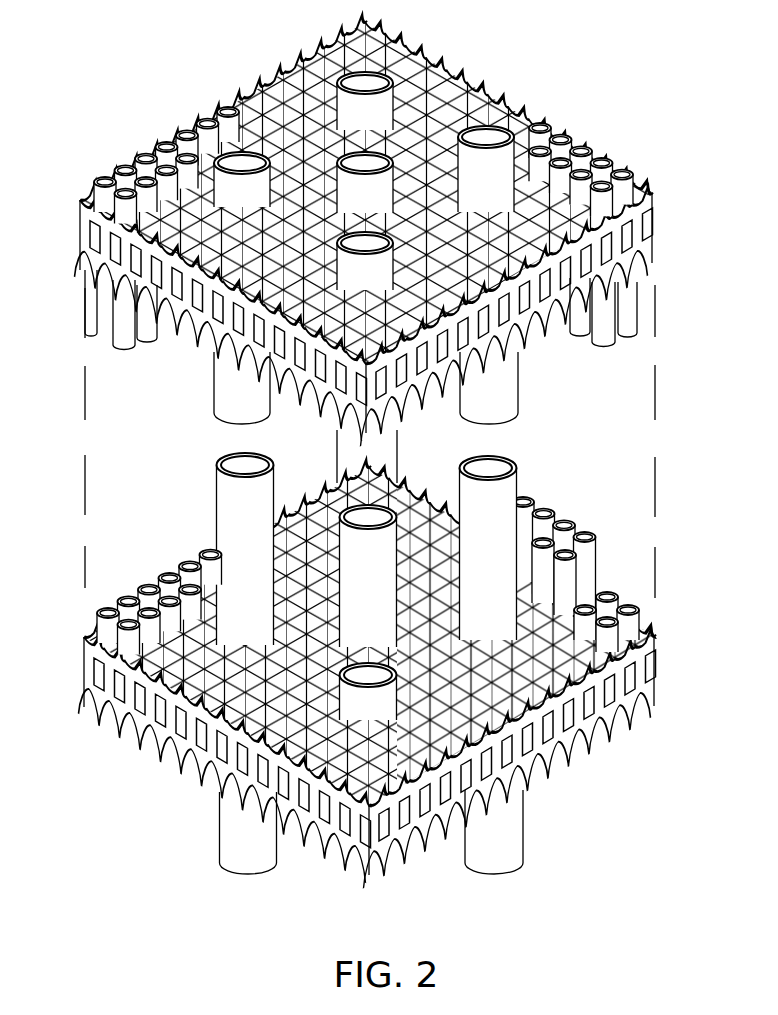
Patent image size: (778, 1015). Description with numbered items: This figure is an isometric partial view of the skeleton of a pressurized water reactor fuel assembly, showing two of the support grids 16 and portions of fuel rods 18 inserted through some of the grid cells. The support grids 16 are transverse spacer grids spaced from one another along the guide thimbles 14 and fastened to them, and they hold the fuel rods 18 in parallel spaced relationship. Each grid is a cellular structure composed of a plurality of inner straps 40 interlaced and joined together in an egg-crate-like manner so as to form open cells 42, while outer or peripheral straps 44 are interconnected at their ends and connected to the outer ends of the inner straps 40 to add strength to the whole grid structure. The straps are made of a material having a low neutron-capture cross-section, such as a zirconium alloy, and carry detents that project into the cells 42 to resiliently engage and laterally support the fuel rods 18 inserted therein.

The guide thimbles 14 is at (510, 123).
The support grids 16 is at (652, 222).
The fuel rods 18 is at (157, 147).
The inner straps 40 is at (447, 83).
The open cells 42 is at (294, 82).
The outer straps 44 is at (85, 222).